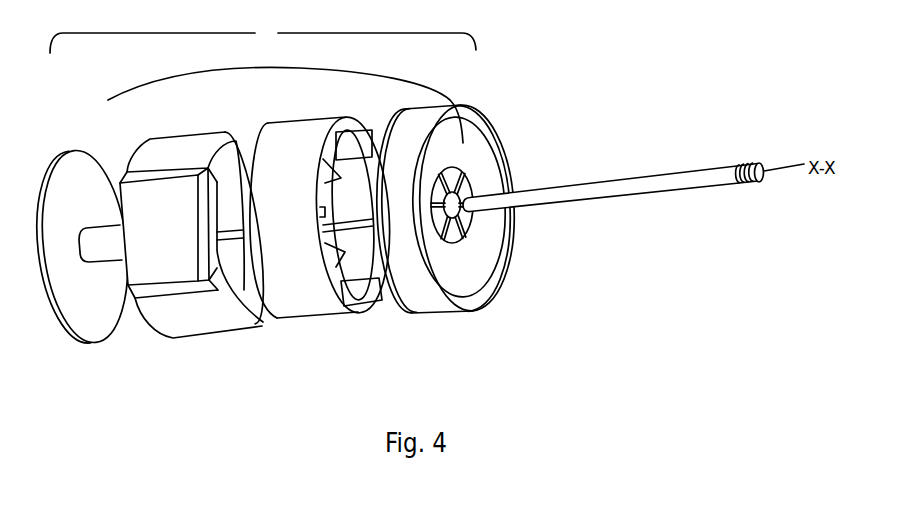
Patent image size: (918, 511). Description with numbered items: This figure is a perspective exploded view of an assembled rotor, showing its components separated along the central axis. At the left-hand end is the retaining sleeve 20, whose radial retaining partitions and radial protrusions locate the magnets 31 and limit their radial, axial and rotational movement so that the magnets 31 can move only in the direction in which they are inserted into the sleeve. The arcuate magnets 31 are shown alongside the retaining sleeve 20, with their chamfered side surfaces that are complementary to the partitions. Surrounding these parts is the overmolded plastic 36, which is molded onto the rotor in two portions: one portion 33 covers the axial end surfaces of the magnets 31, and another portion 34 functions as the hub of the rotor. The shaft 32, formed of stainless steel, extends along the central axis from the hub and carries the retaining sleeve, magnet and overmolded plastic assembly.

The overmolded plastic 36 is at (255, 33).
The portion of overmolded plastic covering axial end surfaces of the magnets 33 is at (85, 168).
The magnet 31 is at (185, 137).
The retaining sleeve 20 is at (313, 312).
The portion of overmolded plastic functioning as hub 34 is at (470, 229).
The shaft 32 is at (605, 188).